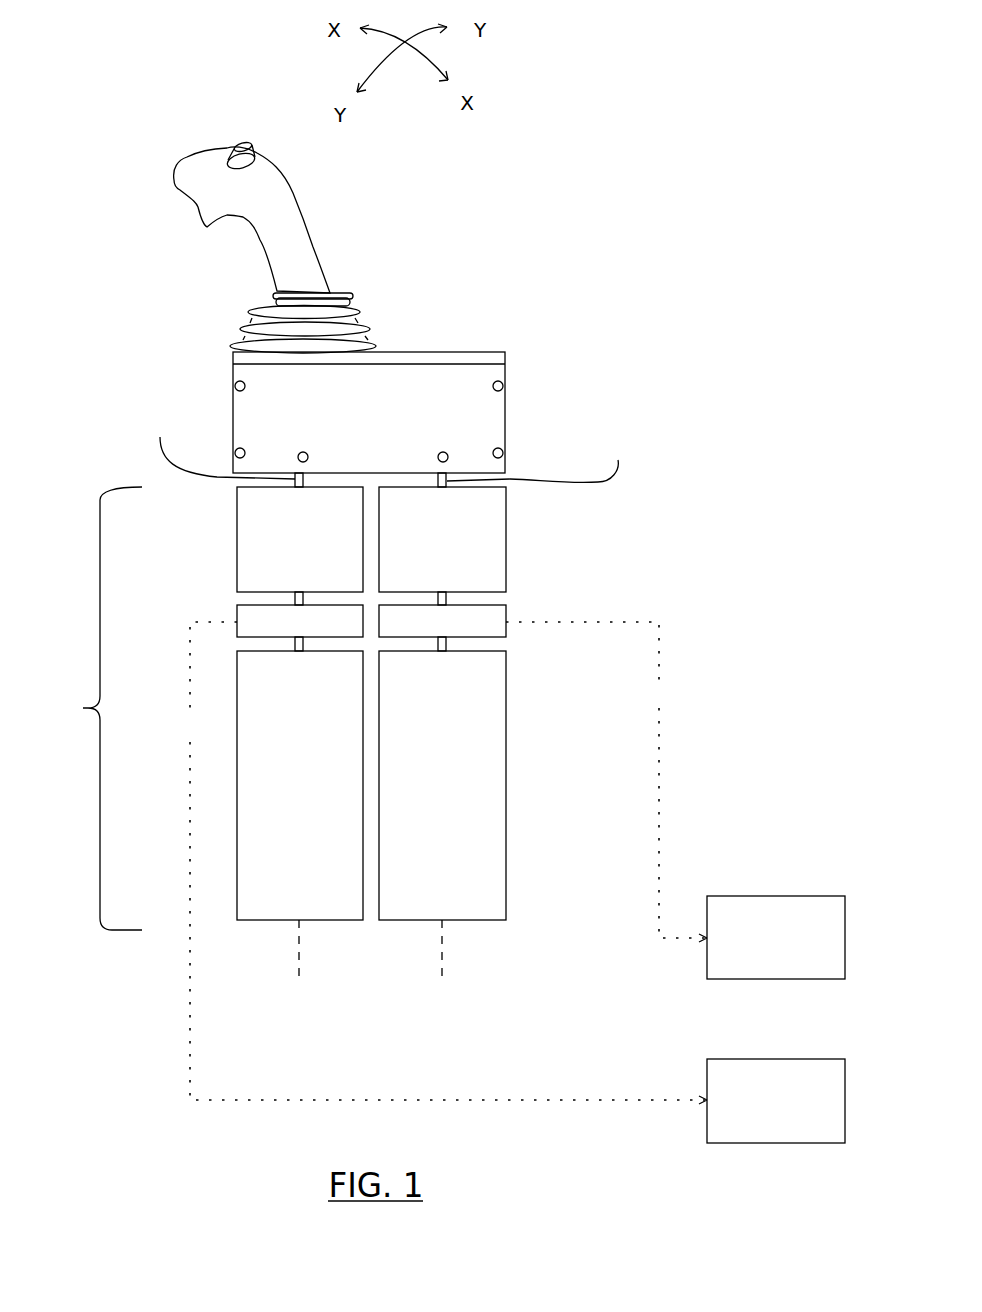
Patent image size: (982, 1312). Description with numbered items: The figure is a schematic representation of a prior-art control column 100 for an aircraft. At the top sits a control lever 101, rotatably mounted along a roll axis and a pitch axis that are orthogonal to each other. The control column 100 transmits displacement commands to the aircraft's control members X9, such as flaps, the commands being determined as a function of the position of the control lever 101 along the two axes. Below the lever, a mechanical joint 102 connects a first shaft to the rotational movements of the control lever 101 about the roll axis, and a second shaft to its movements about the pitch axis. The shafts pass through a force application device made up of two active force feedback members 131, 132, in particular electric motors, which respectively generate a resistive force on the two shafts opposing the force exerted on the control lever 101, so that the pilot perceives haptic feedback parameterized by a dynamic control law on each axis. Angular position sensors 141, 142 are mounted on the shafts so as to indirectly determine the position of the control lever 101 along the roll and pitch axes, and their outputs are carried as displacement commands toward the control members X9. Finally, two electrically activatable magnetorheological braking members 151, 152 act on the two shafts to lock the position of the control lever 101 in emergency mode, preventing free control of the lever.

The control column 100 is at (465, 202).
The control lever 101 is at (202, 172).
The mechanical joint 102 is at (413, 387).
The active force feedback member 131 is at (281, 554).
The active force feedback member 132 is at (424, 554).
The angular position sensor 141 is at (281, 634).
The angular position sensor 142 is at (424, 634).
The braking member 151 is at (281, 799).
The braking member 152 is at (424, 799).
The control members X9 is at (763, 949).